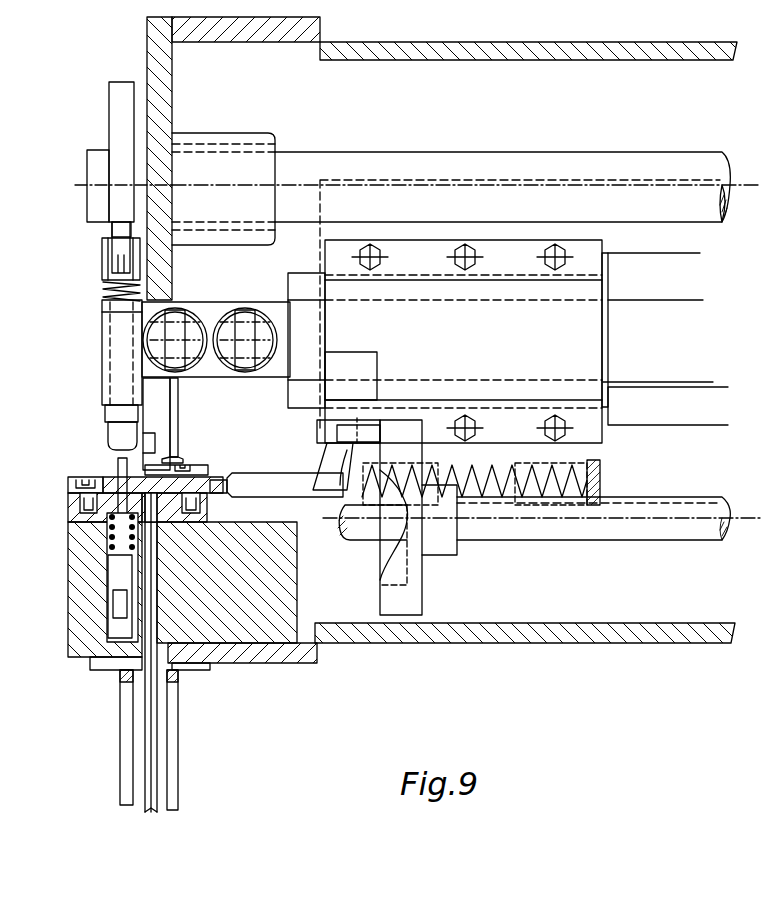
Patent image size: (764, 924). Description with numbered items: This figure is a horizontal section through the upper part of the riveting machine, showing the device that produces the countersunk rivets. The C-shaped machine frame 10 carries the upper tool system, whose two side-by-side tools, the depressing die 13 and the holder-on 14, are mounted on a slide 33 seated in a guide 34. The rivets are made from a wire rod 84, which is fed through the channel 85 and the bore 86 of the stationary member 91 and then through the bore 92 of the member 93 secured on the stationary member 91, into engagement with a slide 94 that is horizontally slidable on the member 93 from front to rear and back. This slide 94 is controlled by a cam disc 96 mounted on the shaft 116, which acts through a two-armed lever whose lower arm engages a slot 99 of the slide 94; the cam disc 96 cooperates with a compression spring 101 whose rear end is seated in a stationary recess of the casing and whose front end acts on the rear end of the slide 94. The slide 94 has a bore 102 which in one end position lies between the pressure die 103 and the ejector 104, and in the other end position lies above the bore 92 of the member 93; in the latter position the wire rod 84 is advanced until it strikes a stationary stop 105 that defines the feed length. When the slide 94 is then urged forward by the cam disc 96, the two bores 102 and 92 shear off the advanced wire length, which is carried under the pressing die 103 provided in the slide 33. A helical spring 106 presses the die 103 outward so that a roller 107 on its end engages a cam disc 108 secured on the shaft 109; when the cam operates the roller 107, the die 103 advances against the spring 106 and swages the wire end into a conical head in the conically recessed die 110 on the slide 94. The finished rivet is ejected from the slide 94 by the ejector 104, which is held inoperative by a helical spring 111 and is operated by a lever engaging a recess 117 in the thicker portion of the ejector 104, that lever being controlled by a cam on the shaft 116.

The machine frame 10 is at (407, 48).
The depressing die 13 is at (246, 362).
The holder-on 14 is at (176, 362).
The slide 33 is at (290, 300).
The guide 34 is at (587, 253).
The wire rod 84 is at (150, 752).
The channel 85 is at (132, 714).
The bore 86 is at (210, 650).
The stationary member 91 is at (78, 593).
The bore 92 is at (155, 514).
The member 93 is at (77, 507).
The slide 94 is at (202, 488).
The cam disc 96 is at (425, 583).
The slot 99 is at (310, 483).
The compression spring 101 is at (460, 481).
The bore 102 is at (107, 480).
The pressure die 103 is at (115, 433).
The ejector 104 is at (115, 563).
The stationary stop 105 is at (157, 442).
The helical spring 106 is at (105, 295).
The roller 107 is at (120, 257).
The cam disc 108 is at (117, 100).
The shaft 109 is at (445, 160).
The conically recessed die 110 is at (117, 477).
The helical spring 111 is at (107, 535).
The shaft 116 is at (622, 530).
The recess 117 is at (120, 607).